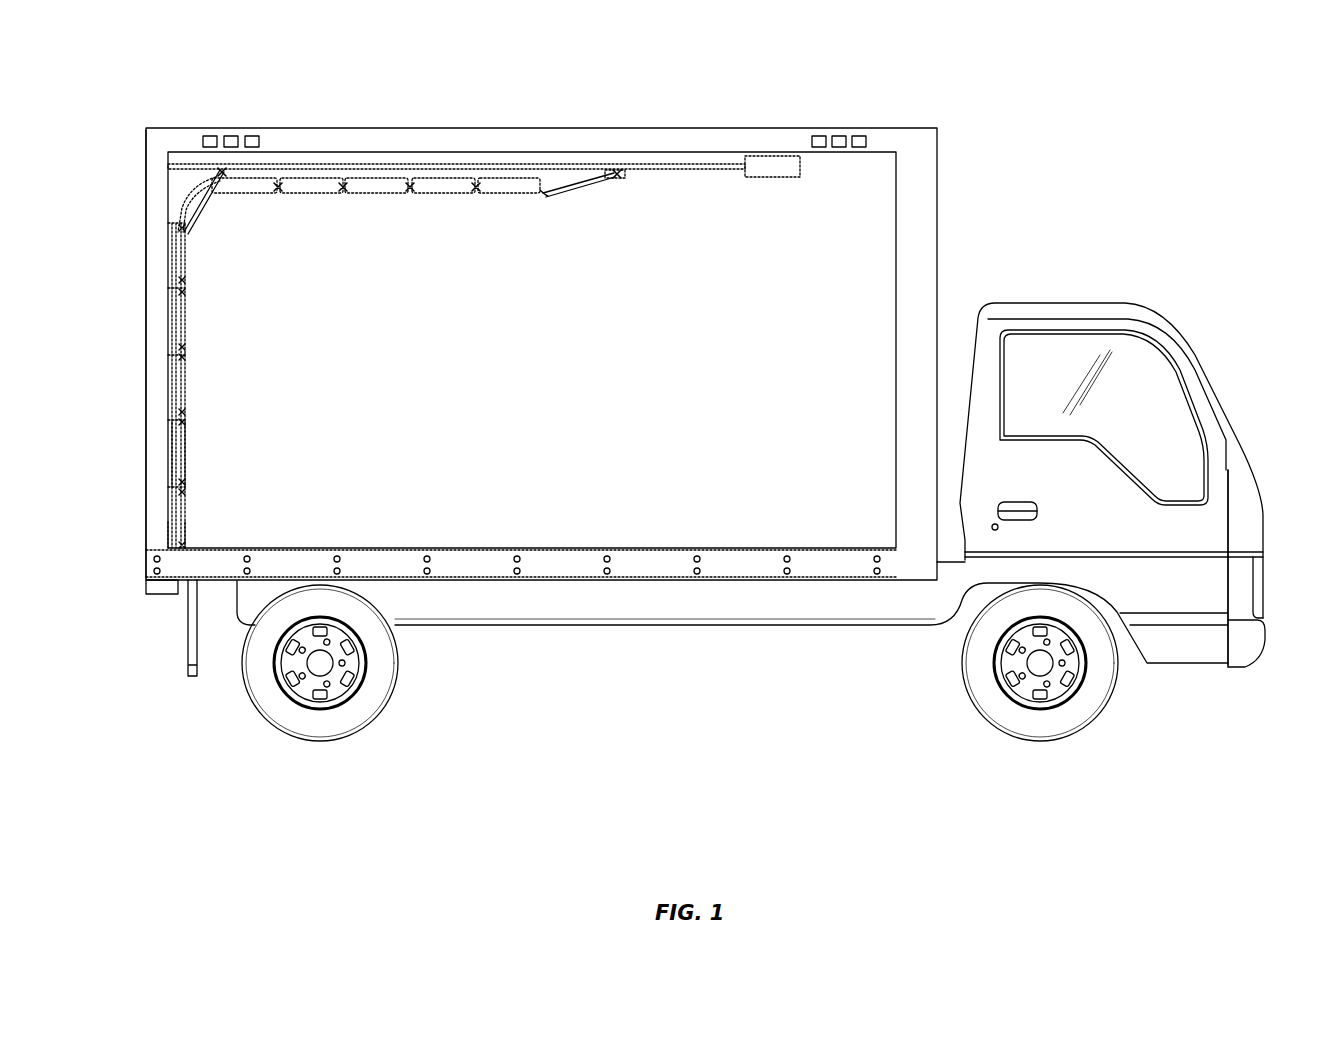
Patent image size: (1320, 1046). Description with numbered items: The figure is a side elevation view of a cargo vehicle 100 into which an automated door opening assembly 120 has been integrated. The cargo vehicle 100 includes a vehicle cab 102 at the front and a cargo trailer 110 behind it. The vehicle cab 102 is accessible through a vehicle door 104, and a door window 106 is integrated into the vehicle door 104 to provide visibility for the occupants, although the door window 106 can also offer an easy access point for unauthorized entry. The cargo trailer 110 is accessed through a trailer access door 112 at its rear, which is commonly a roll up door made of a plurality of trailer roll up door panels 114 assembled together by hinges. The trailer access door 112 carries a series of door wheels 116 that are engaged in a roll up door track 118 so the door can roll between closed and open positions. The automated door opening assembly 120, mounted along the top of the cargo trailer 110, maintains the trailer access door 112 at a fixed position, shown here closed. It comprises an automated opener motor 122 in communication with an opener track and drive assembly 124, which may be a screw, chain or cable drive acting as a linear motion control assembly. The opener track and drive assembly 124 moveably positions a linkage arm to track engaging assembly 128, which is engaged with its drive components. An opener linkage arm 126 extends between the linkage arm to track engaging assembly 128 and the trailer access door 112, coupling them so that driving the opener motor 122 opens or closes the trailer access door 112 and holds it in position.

The cargo vehicle 100 is at (671, 407).
The vehicle cab 102 is at (1068, 298).
The vehicle door 104 is at (1125, 510).
The door window 106 is at (1160, 420).
The cargo trailer 110 is at (527, 127).
The trailer access door 112 is at (145, 393).
The trailer roll up door panels 114 is at (168, 520).
The door wheels 116 is at (186, 490).
The roll up door track 118 is at (186, 318).
The automated door opening assembly 120 is at (451, 330).
The automated opener motor 122 is at (772, 178).
The opener track and drive assembly 124 is at (680, 172).
The opener linkage arm 126 is at (572, 192).
The linkage arm to track engaging assembly 128 is at (617, 170).